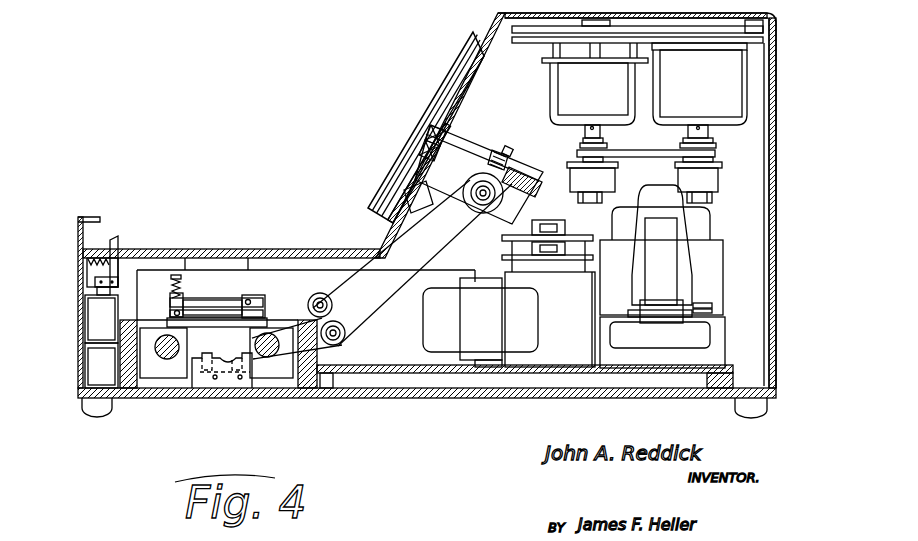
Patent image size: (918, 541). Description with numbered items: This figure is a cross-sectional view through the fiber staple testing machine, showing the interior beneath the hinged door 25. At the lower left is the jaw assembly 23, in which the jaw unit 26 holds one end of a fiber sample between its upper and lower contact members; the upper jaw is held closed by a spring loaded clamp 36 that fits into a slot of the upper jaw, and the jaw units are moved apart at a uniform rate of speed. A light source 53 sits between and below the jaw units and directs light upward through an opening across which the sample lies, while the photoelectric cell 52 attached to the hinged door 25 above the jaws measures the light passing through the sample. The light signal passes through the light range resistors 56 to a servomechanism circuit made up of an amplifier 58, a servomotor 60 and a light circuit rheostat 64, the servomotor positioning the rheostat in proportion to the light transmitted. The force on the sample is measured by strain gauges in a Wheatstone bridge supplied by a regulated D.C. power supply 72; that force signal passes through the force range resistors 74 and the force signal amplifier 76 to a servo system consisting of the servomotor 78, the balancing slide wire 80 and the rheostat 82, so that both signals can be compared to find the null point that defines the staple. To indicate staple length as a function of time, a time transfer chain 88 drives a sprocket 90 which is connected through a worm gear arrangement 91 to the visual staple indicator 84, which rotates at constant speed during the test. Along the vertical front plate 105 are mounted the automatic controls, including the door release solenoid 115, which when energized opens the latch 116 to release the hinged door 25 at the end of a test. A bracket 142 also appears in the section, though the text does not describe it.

The jaw assembly 23 is at (273, 316).
The hinged door 25 is at (152, 248).
The jaw unit 26 is at (243, 300).
The spring loaded clamp 36 is at (173, 283).
The photoelectric cell 52 is at (217, 248).
The light source 53 is at (205, 383).
The light range resistors 56 is at (581, 233).
The amplifier 58 is at (398, 347).
The servomotor 60 is at (553, 124).
The light circuit rheostat 64 is at (712, 180).
The regulated D.C. power supply 72 is at (727, 318).
The force range resistors 74 is at (575, 262).
The force signal amplifier 76 is at (578, 345).
The servomotor 78 is at (736, 110).
The balancing slide wire 80 is at (563, 78).
The rheostat 82 is at (608, 179).
The visual staple indicator 84 is at (402, 158).
The time transfer chain 88 is at (361, 291).
The sprocket 90 is at (483, 176).
The worm gear arrangement 91 is at (481, 206).
The vertical front plate 105 is at (80, 344).
The door release solenoid 115 is at (80, 307).
The latch 116 is at (117, 243).
The bracket 142 is at (410, 207).